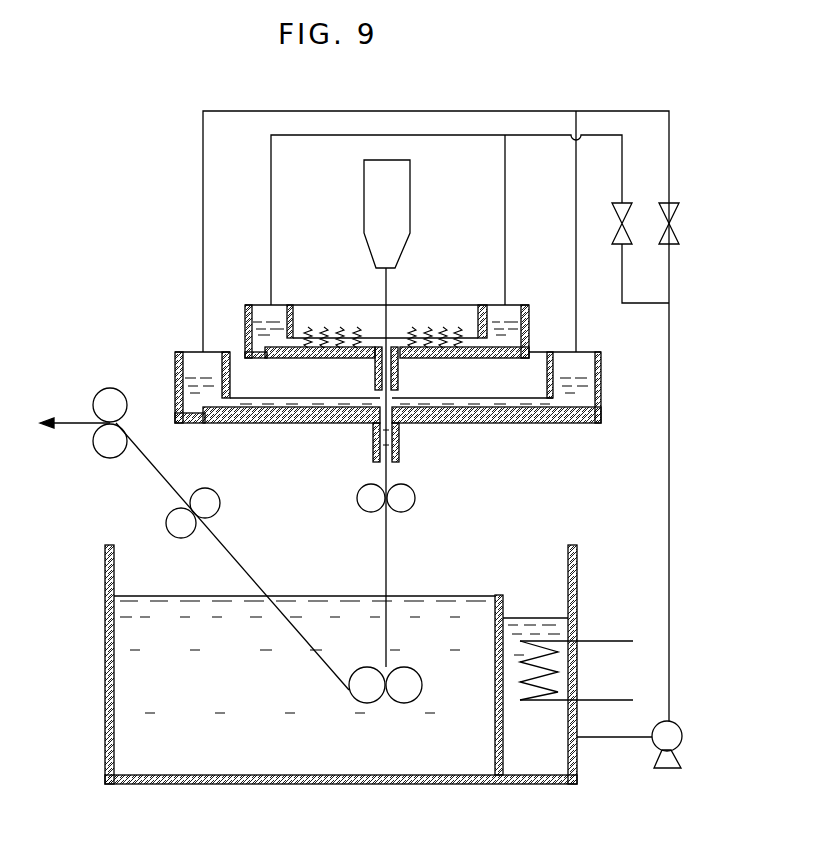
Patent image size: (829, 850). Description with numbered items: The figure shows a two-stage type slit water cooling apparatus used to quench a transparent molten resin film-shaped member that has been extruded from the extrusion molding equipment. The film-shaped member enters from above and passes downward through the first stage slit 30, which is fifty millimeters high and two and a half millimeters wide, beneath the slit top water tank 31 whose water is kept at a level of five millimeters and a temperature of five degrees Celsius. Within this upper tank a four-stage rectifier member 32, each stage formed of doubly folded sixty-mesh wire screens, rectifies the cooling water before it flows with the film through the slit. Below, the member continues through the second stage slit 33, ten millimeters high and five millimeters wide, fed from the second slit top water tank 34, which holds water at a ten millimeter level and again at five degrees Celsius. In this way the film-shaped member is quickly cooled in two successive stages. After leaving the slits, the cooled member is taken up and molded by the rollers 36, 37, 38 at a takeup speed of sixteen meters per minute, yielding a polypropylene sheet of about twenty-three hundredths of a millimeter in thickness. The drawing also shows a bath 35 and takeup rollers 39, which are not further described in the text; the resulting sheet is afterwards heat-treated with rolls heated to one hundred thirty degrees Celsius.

The first stage slit 30 is at (399, 375).
The slit top water tank 31 is at (530, 330).
The rectifier member 32 is at (430, 327).
The second stage slit 33 is at (399, 441).
The slit top water tank 34 is at (603, 391).
The bath tank 35 is at (105, 615).
The rollers 36 is at (415, 498).
The rollers 37 is at (422, 685).
The rollers 38 is at (220, 507).
The take-up rollers 39 is at (127, 406).